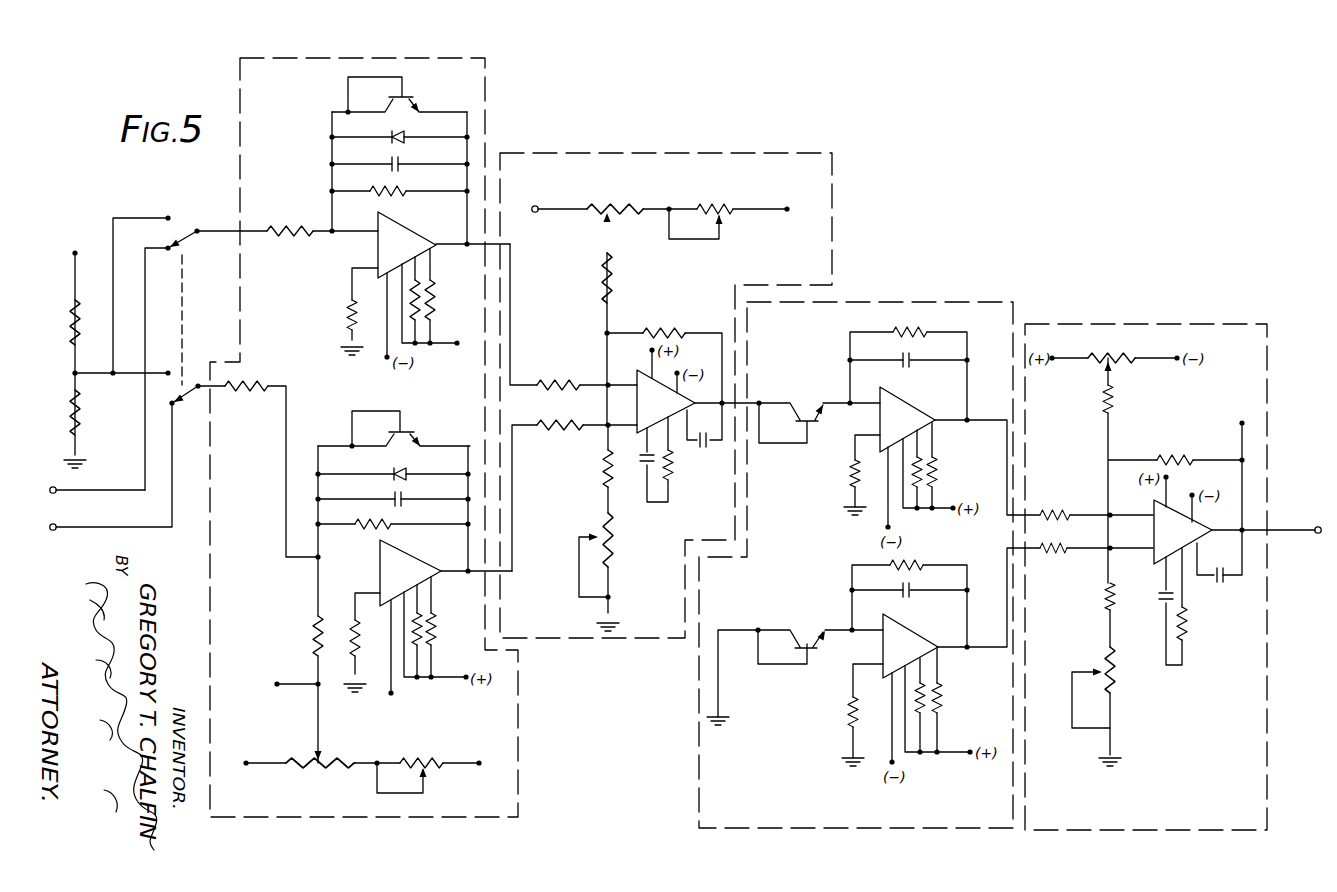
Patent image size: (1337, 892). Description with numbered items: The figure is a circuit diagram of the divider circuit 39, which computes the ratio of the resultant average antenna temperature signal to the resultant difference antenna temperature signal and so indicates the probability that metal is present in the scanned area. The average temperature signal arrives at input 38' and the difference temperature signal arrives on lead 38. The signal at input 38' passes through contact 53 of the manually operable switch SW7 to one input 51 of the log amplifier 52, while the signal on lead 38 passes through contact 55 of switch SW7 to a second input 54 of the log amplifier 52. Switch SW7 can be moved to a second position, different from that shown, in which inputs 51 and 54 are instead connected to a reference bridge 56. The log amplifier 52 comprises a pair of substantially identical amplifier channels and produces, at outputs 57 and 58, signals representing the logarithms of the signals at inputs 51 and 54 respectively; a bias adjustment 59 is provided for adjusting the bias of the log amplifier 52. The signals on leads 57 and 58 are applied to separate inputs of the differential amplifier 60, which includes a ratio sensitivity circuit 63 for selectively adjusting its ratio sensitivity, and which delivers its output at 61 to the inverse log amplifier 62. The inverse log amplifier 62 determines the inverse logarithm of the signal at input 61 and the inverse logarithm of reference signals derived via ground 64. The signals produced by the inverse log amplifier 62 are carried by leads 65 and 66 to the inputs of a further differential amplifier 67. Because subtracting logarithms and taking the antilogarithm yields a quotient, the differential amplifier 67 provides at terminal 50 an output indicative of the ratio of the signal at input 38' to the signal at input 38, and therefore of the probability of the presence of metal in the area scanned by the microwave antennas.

The divider circuit 39 is at (194, 78).
The lead 38 is at (111, 488).
The input 38' is at (97, 503).
The input of log amplifier 51 is at (224, 206).
The contact of switch SW7 53 is at (190, 240).
The second input of log amplifier 54 is at (218, 388).
The contact of switch SW7 55 is at (180, 398).
The manually operable switch SW7 is at (183, 325).
The reference bridge 56 is at (71, 356).
The log amplifier 52 is at (488, 82).
The output of log amplifier 57 is at (512, 338).
The output of log amplifier 58 is at (514, 490).
The bias adjustment 59 is at (378, 745).
The differential amplifier 60 is at (834, 162).
The ratio sensitivity circuit 63 is at (641, 198).
The output 61 is at (747, 403).
The inverse log amplifier 62 is at (905, 302).
The ground 64 is at (723, 718).
The lead 65 is at (1006, 472).
The lead 66 is at (1007, 568).
The differential amplifier 67 is at (1265, 384).
The output terminal 50 is at (1316, 526).